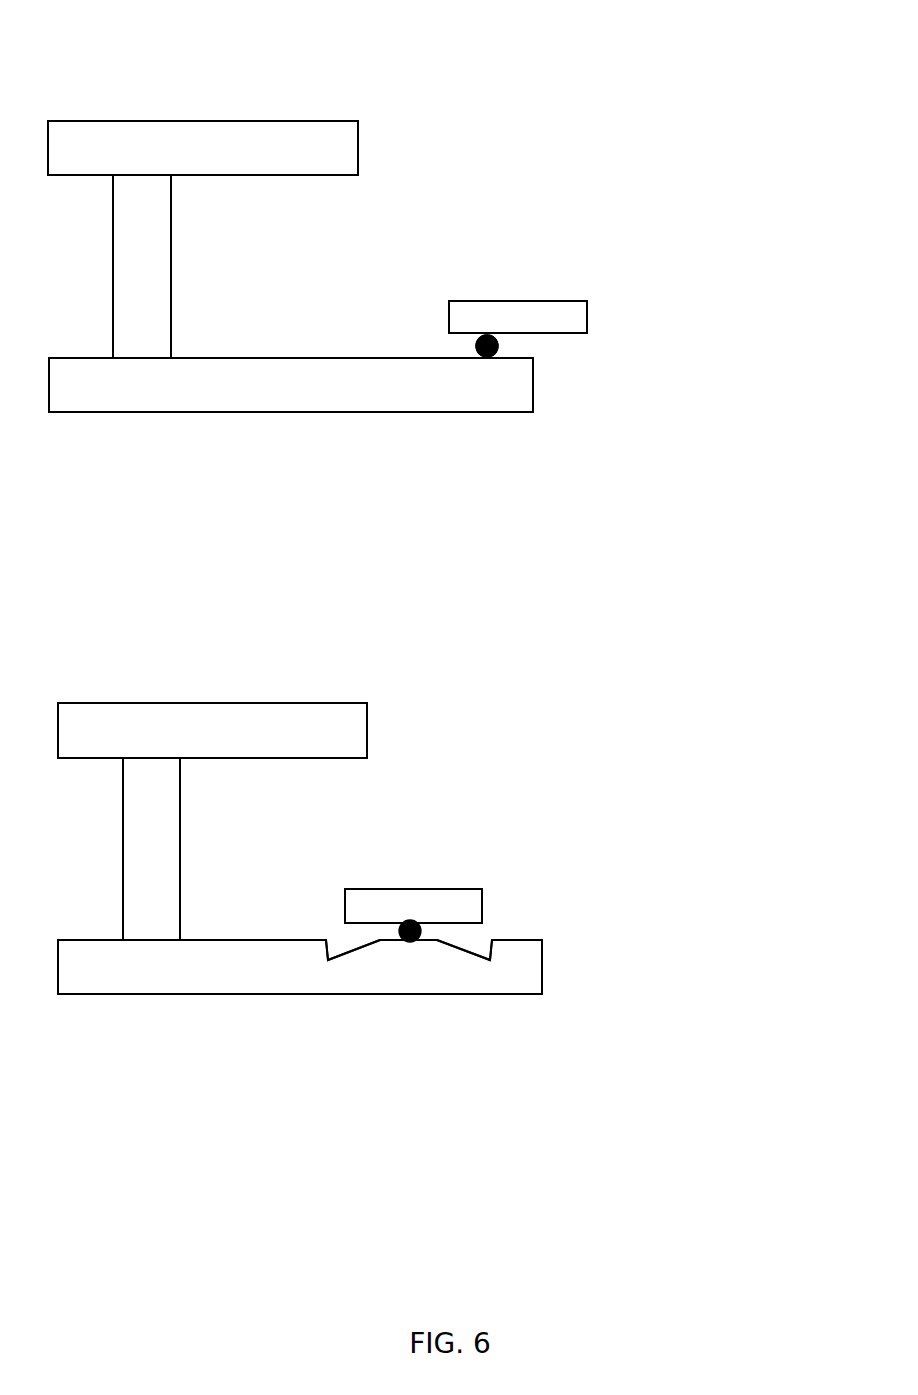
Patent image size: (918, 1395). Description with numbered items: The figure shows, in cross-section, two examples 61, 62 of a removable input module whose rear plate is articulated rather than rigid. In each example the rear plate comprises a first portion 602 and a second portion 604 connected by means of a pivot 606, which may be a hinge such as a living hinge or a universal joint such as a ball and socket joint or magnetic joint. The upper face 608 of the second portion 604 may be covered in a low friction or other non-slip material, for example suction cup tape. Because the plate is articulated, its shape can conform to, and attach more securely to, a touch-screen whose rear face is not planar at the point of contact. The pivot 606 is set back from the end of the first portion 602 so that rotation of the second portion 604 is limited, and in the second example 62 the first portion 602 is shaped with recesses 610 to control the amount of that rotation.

The first example removable input module 61 is at (677, 92).
The second example removable input module 62 is at (662, 673).
The first portion 602 is at (290, 412).
The second portion 604 is at (493, 312).
The pivot 606 is at (515, 345).
The upper face 608 is at (557, 288).
The recesses 610 is at (475, 940).